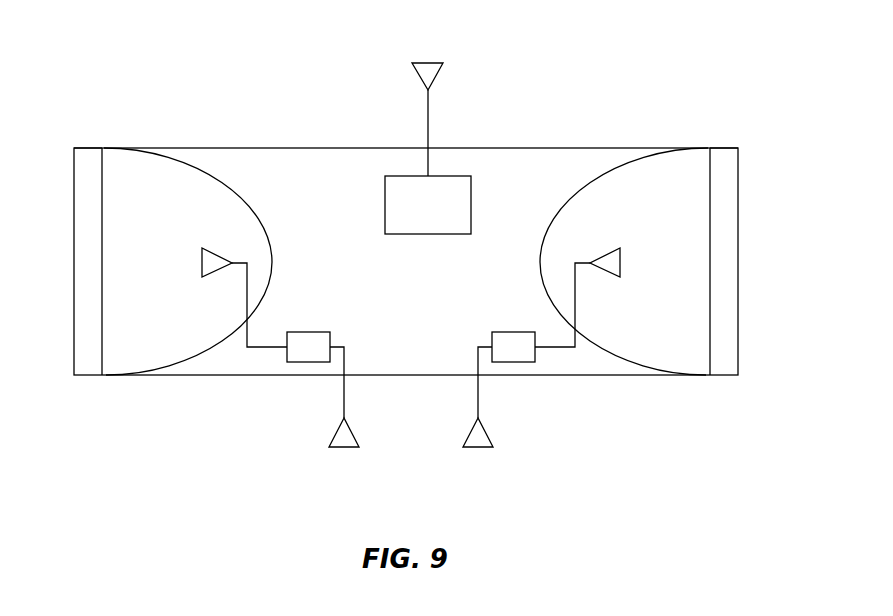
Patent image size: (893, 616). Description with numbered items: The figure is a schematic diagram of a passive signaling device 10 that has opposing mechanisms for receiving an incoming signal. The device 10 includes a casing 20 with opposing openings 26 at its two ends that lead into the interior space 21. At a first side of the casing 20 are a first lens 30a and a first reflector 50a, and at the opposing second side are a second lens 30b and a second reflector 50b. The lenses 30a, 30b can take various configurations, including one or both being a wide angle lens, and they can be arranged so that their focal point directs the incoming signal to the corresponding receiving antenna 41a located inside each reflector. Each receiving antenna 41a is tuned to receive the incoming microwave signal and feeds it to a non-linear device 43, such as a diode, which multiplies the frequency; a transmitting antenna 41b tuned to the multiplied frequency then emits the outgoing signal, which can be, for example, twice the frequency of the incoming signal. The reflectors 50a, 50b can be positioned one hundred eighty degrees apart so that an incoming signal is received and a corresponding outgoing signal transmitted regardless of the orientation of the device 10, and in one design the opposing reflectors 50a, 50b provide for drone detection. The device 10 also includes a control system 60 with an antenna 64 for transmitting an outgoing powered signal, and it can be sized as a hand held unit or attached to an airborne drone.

The signaling device 10 is at (309, 80).
The casing 20 is at (518, 148).
The interior space 21 is at (323, 175).
The opposing openings 26 is at (88, 148).
The first lens 30a is at (90, 365).
The second lens 30b is at (732, 367).
The receiving antenna 41a is at (213, 247).
The transmitting antenna 41b is at (355, 430).
The non-linear device 43 is at (411, 347).
The first reflector 50a is at (218, 170).
The second reflector 50b is at (593, 170).
The control system 60 is at (428, 205).
The antenna 64 is at (438, 75).